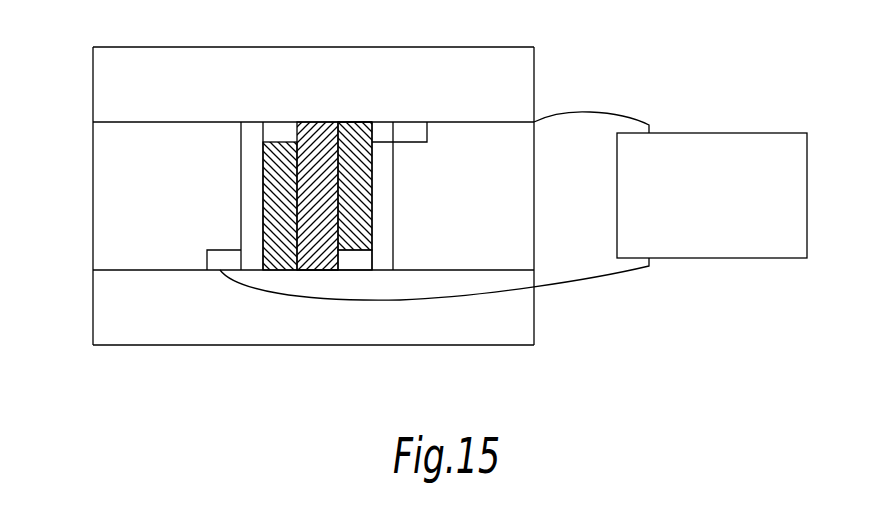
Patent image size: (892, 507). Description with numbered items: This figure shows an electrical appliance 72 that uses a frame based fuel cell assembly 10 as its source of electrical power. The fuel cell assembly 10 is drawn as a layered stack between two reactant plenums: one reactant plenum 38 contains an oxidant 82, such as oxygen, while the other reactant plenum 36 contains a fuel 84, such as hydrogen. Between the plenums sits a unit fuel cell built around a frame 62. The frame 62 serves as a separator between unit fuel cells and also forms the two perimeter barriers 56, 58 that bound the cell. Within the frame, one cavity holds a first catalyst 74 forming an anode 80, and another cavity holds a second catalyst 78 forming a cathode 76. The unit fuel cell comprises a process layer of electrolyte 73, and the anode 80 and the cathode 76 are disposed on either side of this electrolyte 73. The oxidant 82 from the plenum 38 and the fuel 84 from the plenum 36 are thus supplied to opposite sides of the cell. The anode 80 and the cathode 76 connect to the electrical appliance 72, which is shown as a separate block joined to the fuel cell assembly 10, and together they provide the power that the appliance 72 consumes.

The fuel cell assembly 10 is at (98, 53).
The reactant plenum 36 is at (125, 345).
The reactant plenum 38 is at (195, 47).
The oxidant 82 is at (297, 47).
The fuel 84 is at (228, 340).
The cathode 76 is at (355, 122).
The anode 80 is at (265, 172).
The first catalyst 74 is at (297, 217).
The second catalyst 78 is at (338, 197).
The frame 62 is at (393, 235).
The perimeter barrier 58 is at (427, 142).
The electrical appliance 72 is at (712, 140).
The electrolyte 73 is at (320, 258).
The perimeter barrier 56 is at (355, 262).